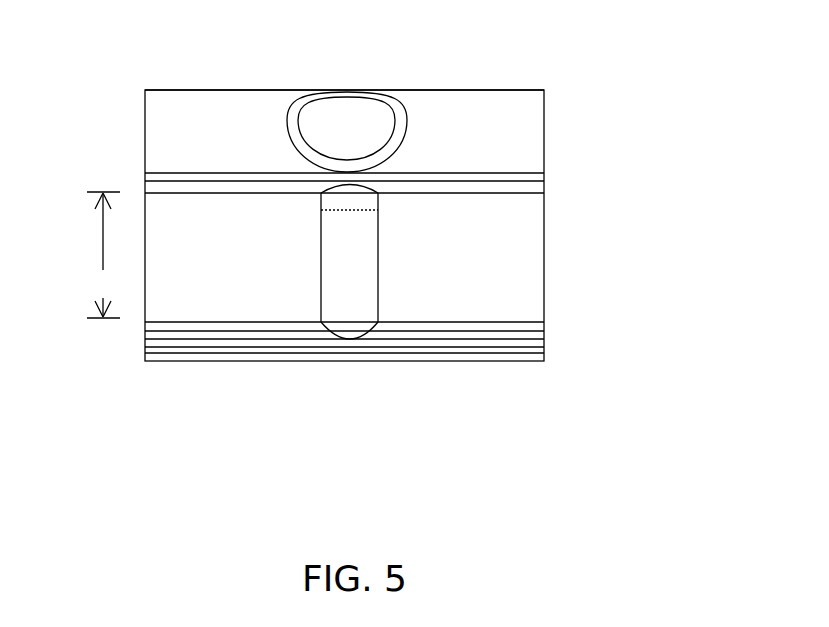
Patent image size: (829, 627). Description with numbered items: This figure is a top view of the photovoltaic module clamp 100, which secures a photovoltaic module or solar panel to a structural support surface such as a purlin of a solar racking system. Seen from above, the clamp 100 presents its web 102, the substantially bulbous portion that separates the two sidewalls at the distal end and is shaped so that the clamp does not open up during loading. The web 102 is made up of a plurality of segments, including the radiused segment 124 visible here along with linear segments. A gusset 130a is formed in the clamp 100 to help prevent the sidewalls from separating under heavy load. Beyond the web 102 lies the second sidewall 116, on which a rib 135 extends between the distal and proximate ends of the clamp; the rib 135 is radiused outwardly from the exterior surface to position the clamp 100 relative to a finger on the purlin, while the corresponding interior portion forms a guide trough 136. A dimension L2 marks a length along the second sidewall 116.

The photovoltaic module clamp 100 is at (585, 111).
The web 102 is at (475, 96).
The radiused segment 124 is at (167, 131).
The second sidewall 116 is at (528, 293).
The gusset 130a is at (345, 113).
The rib 135 is at (363, 322).
The guide trough 136 is at (352, 348).
The length dimension L2 is at (103, 255).